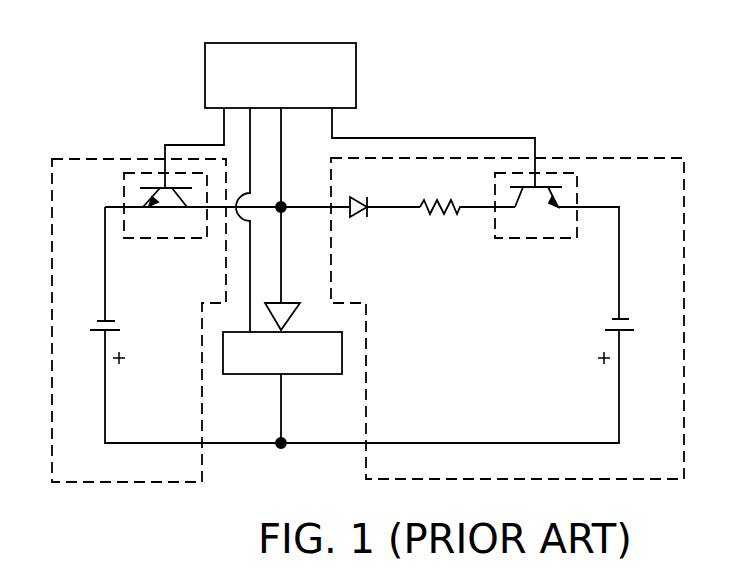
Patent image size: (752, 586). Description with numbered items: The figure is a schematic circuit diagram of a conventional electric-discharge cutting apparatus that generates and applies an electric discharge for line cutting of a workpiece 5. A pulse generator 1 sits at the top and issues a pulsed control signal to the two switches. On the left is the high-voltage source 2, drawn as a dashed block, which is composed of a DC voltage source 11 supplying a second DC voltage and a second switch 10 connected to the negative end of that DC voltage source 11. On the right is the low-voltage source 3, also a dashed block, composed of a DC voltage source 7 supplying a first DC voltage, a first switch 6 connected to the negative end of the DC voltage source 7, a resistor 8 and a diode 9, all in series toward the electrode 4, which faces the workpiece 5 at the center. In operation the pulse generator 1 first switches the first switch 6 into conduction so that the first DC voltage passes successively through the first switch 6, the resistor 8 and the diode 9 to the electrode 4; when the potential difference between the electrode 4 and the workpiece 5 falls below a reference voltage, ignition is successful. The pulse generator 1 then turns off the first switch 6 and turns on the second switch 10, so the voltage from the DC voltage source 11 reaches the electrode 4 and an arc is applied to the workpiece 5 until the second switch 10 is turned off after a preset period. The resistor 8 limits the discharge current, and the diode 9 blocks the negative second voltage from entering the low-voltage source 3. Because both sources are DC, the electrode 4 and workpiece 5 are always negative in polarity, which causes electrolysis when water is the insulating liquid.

The pulse generator 1 is at (277, 43).
The high-voltage source 2 is at (83, 158).
The low-voltage source 3 is at (657, 157).
The electrode 4 is at (283, 283).
The workpiece 5 is at (262, 375).
The switch S1 6 is at (508, 240).
The DC voltage source 7 is at (630, 323).
The resistor 8 is at (428, 212).
The diode 9 is at (353, 212).
The switch S2 10 is at (137, 240).
The DC voltage source 11 is at (93, 322).